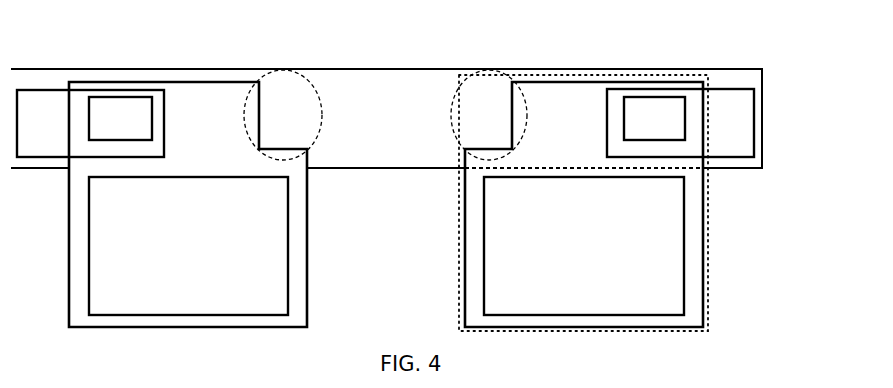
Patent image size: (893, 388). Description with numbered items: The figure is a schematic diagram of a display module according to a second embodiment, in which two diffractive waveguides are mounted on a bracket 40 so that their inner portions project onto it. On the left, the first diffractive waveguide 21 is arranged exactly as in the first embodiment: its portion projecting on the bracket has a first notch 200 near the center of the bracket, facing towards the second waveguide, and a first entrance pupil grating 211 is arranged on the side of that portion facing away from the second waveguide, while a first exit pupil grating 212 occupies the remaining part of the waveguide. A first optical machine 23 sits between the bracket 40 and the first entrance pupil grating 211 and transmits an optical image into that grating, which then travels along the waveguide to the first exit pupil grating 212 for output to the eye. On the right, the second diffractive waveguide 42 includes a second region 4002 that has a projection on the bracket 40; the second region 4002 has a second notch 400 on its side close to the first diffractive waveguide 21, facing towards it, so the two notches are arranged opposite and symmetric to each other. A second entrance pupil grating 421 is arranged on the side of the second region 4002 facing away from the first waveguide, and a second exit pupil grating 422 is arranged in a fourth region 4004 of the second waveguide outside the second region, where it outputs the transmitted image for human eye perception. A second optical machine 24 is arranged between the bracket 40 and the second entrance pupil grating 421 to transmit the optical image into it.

The bracket 40 is at (408, 69).
The first optical machine 23 is at (41, 90).
The first diffractive waveguide 21 is at (207, 82).
The first entrance pupil grating 211 is at (120, 97).
The first exit pupil grating 212 is at (289, 208).
The first notch 200 is at (295, 72).
The second notch 400 is at (500, 75).
The second diffractive waveguide 42 is at (565, 82).
The second entrance pupil grating 421 is at (637, 97).
The second exit pupil grating 422 is at (484, 208).
The second optical machine 24 is at (715, 89).
The second region 4002 is at (709, 145).
The fourth region 4004 is at (709, 237).